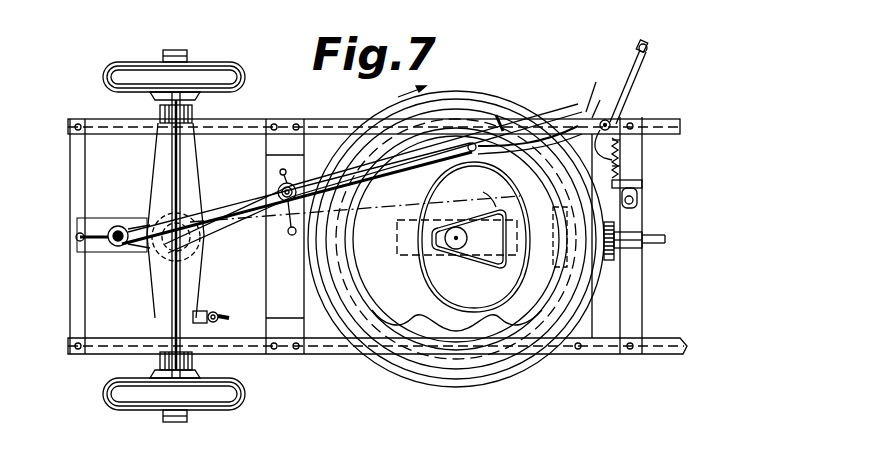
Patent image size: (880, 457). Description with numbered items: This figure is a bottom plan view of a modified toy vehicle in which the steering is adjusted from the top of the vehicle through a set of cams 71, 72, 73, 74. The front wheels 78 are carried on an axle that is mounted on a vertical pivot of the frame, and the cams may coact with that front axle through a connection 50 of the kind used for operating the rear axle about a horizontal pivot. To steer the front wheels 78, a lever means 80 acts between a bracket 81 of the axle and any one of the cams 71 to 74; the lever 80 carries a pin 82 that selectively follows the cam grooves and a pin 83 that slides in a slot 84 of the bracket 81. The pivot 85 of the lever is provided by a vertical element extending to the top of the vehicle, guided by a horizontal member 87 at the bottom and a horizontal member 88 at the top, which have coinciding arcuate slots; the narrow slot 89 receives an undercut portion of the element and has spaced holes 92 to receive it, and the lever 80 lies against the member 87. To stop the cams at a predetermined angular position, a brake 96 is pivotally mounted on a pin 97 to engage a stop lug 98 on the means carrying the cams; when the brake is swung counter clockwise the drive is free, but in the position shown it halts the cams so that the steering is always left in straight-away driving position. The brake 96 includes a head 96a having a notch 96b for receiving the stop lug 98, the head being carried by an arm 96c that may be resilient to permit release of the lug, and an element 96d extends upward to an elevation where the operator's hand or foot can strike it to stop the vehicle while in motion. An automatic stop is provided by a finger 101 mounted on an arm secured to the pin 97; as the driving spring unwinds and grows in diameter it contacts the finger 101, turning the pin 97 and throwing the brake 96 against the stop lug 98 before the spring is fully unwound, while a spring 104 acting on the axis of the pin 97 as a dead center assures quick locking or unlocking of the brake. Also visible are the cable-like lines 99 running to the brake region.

The connection 50 is at (222, 324).
The cam 71 is at (448, 104).
The cam 72 is at (547, 124).
The cam 73 is at (478, 290).
The cam 74 is at (457, 223).
The front wheels 78 is at (104, 400).
The lever means 80 is at (228, 245).
The bracket 81 is at (377, 235).
The pin 82 is at (474, 143).
The pin 83 is at (120, 247).
The slot 84 is at (98, 240).
The pivot 85 is at (272, 230).
The horizontal member 87 is at (263, 258).
The horizontal member 88 is at (407, 192).
The arcuate slot 89 is at (280, 174).
The spaced holes 92 is at (290, 236).
The brake 96 is at (632, 72).
The head 96a is at (621, 143).
The notch 96b is at (638, 199).
The arm 96c is at (614, 166).
The element 96d is at (650, 40).
The pin 97 is at (616, 118).
The stop lug 98 is at (596, 83).
The cable 99 is at (535, 84).
The finger 101 is at (601, 98).
The spring 104 is at (642, 180).